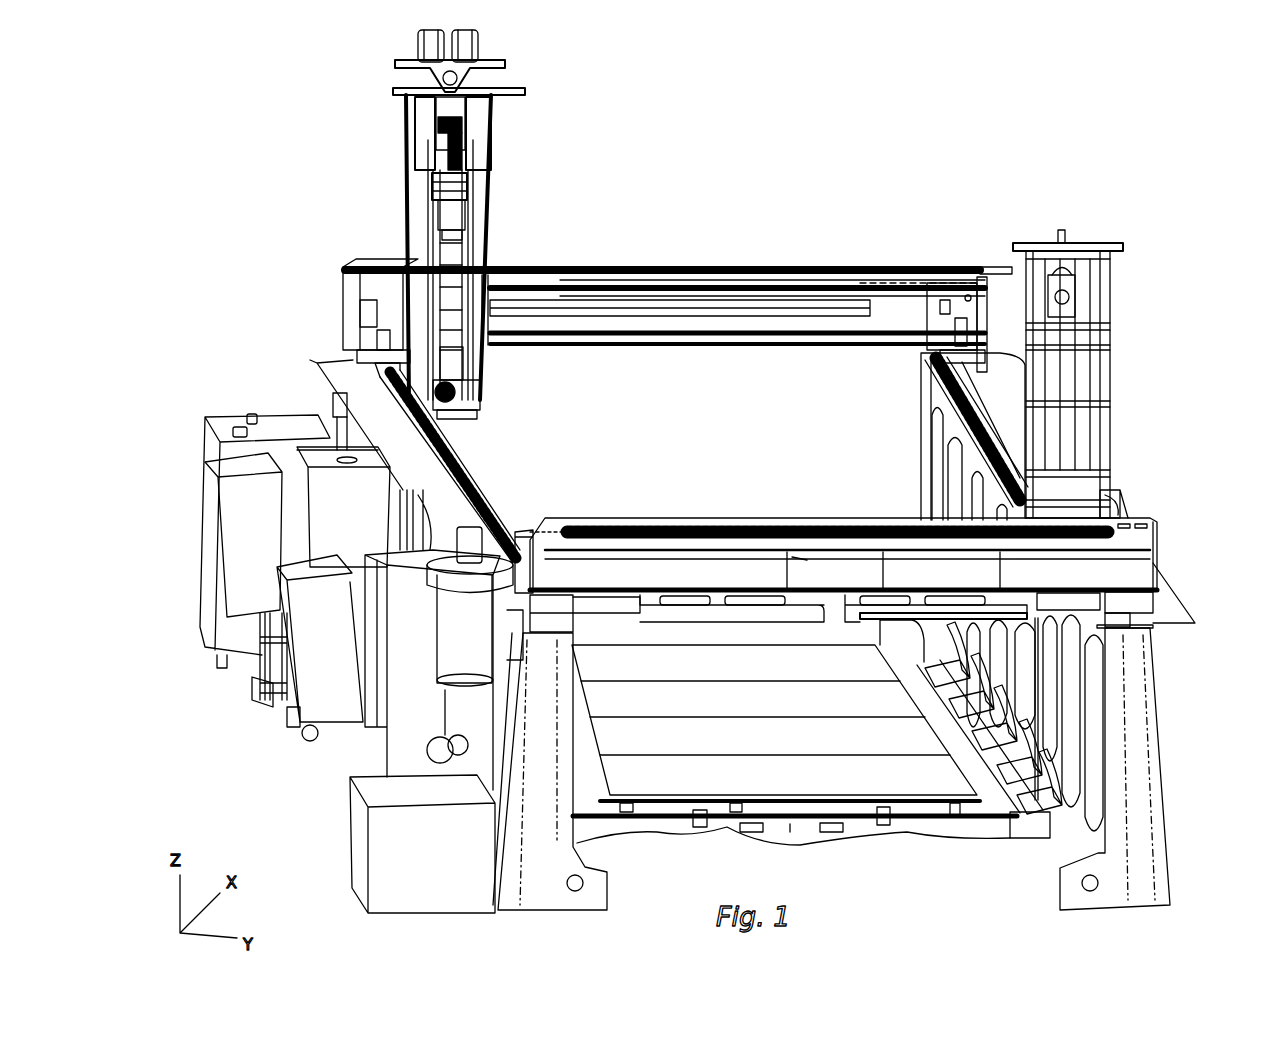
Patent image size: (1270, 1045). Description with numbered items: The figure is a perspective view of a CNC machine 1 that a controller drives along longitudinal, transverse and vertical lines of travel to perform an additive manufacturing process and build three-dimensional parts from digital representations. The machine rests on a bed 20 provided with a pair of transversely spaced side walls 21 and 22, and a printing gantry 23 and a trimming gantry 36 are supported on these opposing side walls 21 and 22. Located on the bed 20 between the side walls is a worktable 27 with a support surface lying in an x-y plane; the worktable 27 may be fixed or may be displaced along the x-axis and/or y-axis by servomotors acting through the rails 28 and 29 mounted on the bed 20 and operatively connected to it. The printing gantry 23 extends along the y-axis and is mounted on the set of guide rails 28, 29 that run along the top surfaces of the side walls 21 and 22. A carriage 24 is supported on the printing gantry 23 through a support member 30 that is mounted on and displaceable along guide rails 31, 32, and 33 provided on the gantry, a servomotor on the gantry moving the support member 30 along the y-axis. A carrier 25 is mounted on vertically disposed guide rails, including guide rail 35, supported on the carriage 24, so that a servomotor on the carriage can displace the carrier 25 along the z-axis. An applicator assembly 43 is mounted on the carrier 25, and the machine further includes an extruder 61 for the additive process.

The CNC machine 1 is at (1098, 150).
The bed 20 is at (720, 828).
The side wall 21 is at (562, 740).
The side wall 22 is at (1160, 770).
The printing gantry 23 is at (915, 245).
The carriage 24 is at (400, 226).
The carrier 25 is at (503, 154).
The worktable 27 is at (745, 730).
The guide rail 28 is at (486, 496).
The guide rail 29 is at (948, 395).
The support member 30 is at (396, 250).
The guide rail 31 is at (770, 266).
The guide rail 32 is at (698, 290).
The guide rail 33 is at (730, 346).
The guide rail 35 is at (476, 356).
The trimming gantry 36 is at (1112, 512).
The applicator assembly 43 is at (468, 430).
The extruder 61 is at (486, 237).